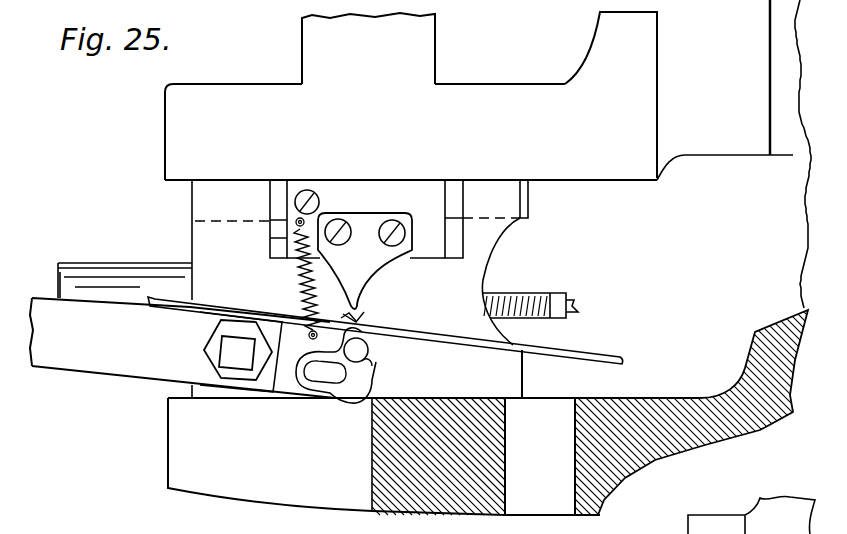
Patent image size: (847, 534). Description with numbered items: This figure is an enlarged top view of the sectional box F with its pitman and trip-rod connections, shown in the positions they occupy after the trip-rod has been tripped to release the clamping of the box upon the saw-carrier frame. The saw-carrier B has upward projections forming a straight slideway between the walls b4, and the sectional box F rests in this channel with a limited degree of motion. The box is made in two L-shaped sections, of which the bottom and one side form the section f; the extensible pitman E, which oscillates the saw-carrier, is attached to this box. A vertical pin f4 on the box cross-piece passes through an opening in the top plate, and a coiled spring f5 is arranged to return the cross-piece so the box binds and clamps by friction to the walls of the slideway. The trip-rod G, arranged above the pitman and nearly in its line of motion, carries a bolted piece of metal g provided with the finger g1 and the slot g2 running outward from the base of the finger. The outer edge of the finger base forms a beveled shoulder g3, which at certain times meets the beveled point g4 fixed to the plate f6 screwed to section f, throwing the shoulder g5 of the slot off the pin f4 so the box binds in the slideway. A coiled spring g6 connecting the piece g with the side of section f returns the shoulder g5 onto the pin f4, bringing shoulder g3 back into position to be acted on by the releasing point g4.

The saw-carrier B is at (558, 267).
The walls of the slideway b4 is at (411, 299).
The pitman E is at (125, 269).
The sectional box F is at (356, 289).
The trip-rod G is at (182, 348).
The section of the sectional box f is at (405, 219).
The vertical pin f4 is at (356, 350).
The coiled spring f5 is at (530, 299).
The plate f6 is at (353, 244).
The piece of metal g is at (329, 365).
The finger g1 is at (385, 330).
The slot g2 is at (325, 371).
The beveled shoulder g3 is at (369, 310).
The beveled point g4 is at (343, 307).
The shoulder g5 is at (361, 375).
The coiled spring g6 is at (298, 278).